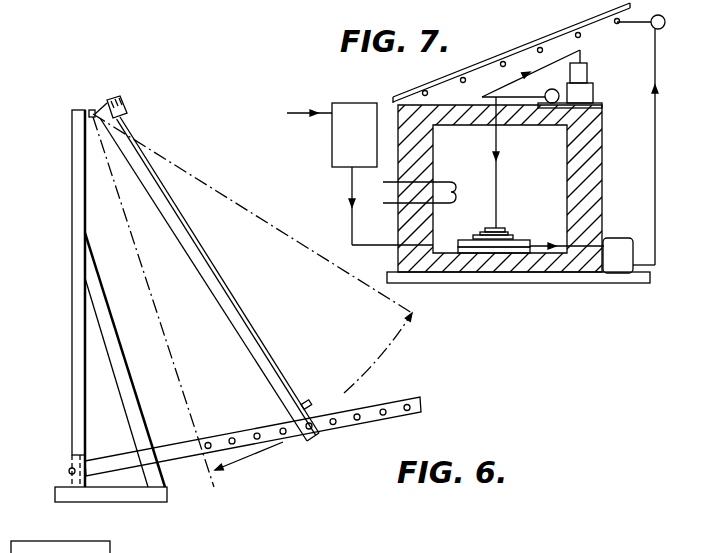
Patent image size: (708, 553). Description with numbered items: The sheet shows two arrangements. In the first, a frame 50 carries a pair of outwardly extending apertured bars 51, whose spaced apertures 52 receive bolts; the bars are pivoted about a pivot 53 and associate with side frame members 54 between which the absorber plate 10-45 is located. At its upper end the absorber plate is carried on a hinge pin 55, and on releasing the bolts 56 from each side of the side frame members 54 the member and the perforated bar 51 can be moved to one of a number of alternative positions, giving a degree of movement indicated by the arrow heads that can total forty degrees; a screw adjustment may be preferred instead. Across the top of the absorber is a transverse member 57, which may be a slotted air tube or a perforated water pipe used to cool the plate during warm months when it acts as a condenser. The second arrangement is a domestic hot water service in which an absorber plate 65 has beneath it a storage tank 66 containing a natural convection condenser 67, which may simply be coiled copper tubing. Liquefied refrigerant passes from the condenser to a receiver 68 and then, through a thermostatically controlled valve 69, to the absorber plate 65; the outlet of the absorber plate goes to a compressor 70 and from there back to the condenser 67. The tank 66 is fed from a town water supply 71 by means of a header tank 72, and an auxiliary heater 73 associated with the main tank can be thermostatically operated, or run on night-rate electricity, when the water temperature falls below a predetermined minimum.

In FIG. 6, the frame 50 is at (118, 302).
In FIG. 6, the apertured bar 51 is at (401, 396).
In FIG. 6, the apertures 52 is at (382, 416).
In FIG. 6, the pivot 53 is at (70, 468).
In FIG. 6, the side frame member 54 is at (240, 338).
In FIG. 6, the hinge pin 55 is at (93, 110).
In FIG. 6, the bolt 56 is at (310, 429).
In FIG. 6, the transverse member 57 is at (125, 99).
In FIG. 6, the absorber plate 10-45 is at (224, 277).
In FIG. 7, the absorber plate 65 is at (522, 47).
In FIG. 7, the storage tank 66 is at (552, 202).
In FIG. 7, the condenser 67 is at (498, 228).
In FIG. 7, the receiver 68 is at (618, 258).
In FIG. 7, the thermostatically controlled valve 69 is at (652, 29).
In FIG. 7, the compressor 70 is at (585, 97).
In FIG. 7, the town water supply 71 is at (306, 93).
In FIG. 7, the header tank 72 is at (343, 138).
In FIG. 7, the auxiliary heater 73 is at (395, 183).